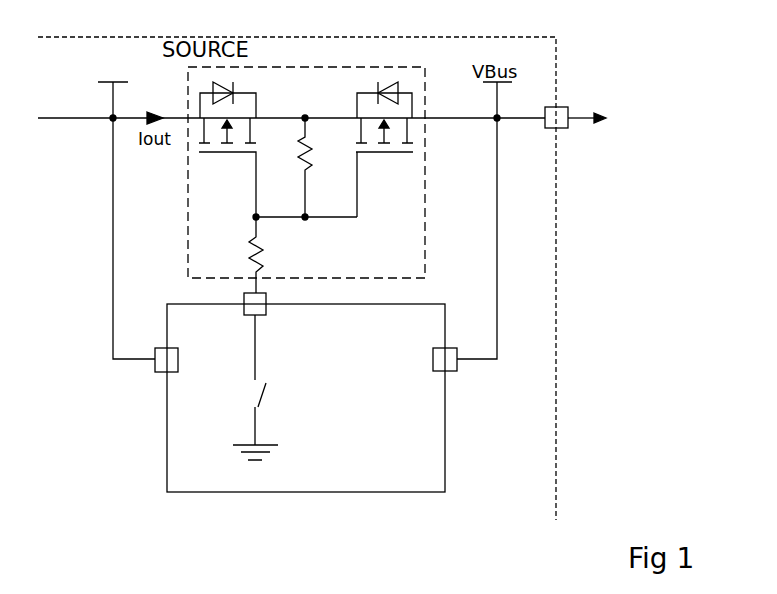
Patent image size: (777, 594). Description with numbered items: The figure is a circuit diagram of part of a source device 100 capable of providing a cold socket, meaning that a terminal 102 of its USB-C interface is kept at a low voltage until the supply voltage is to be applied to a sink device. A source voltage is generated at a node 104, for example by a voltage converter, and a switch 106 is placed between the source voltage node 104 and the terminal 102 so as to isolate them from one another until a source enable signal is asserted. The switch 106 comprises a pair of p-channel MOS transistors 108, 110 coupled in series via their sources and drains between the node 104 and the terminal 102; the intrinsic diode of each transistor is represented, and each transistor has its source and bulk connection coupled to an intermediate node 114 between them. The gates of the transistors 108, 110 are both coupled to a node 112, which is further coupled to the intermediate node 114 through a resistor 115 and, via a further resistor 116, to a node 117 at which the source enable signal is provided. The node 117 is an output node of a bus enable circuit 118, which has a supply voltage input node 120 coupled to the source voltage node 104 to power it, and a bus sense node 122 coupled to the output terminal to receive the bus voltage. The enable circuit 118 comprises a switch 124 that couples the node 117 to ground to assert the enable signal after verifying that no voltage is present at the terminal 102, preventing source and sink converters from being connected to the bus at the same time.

The source device 100 is at (534, 43).
The terminal 102 is at (565, 129).
The node 104 is at (112, 119).
The switch 106 is at (425, 223).
The PMOS transistor 108 is at (224, 156).
The PMOS transistor 110 is at (385, 155).
The node 112 is at (306, 219).
The intermediate node 114 is at (306, 116).
The resistor 115 is at (310, 160).
The second resistor 116 is at (262, 258).
The node 117 is at (267, 296).
The VBus enable circuit 118 is at (422, 450).
The supply voltage Vdd input node 120 is at (157, 363).
The node VBus_sense 122 is at (458, 366).
The switch 124 is at (265, 401).